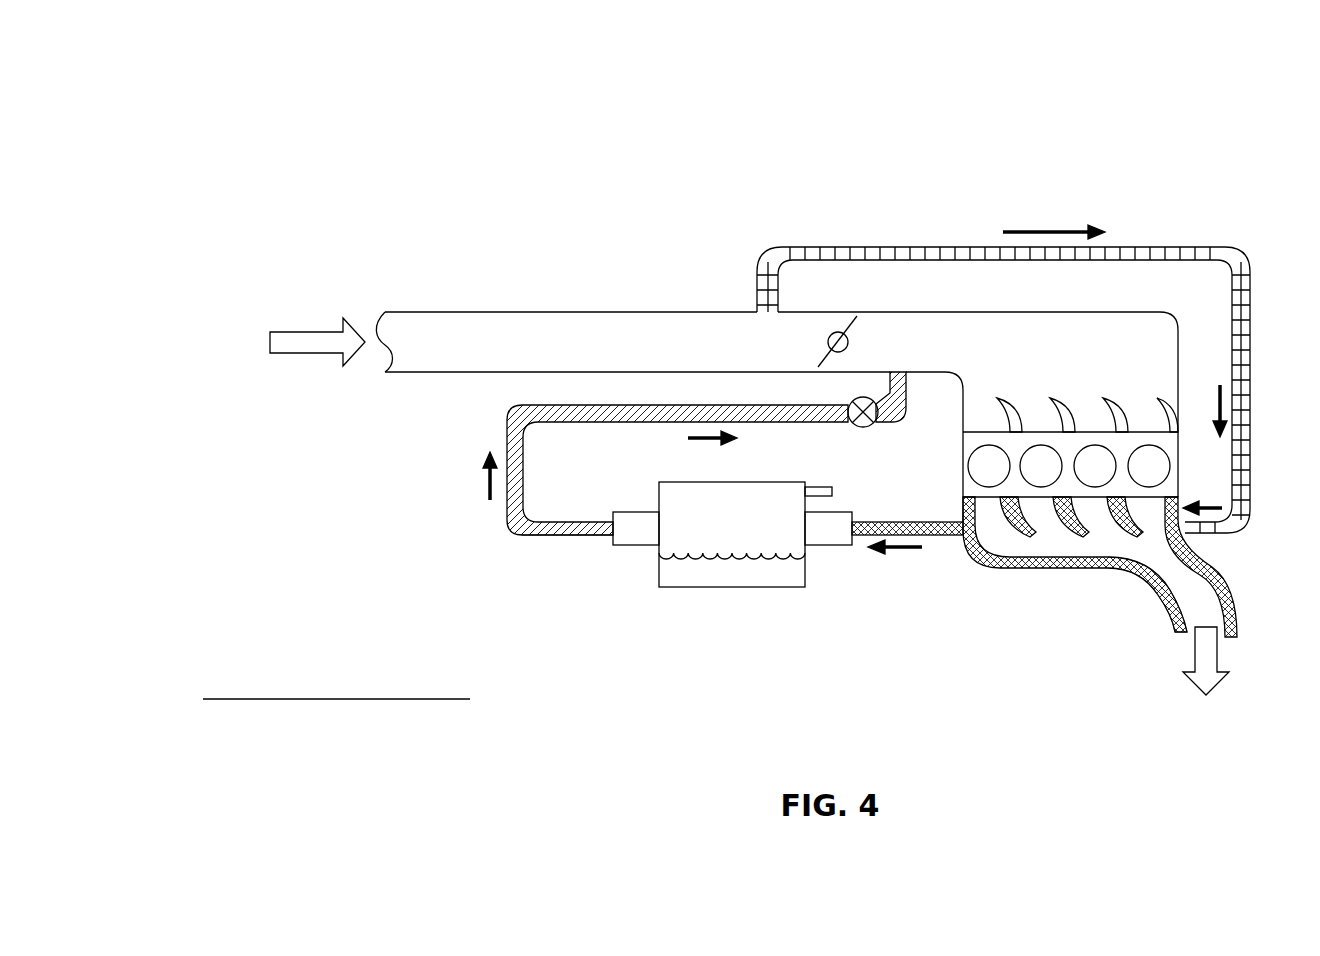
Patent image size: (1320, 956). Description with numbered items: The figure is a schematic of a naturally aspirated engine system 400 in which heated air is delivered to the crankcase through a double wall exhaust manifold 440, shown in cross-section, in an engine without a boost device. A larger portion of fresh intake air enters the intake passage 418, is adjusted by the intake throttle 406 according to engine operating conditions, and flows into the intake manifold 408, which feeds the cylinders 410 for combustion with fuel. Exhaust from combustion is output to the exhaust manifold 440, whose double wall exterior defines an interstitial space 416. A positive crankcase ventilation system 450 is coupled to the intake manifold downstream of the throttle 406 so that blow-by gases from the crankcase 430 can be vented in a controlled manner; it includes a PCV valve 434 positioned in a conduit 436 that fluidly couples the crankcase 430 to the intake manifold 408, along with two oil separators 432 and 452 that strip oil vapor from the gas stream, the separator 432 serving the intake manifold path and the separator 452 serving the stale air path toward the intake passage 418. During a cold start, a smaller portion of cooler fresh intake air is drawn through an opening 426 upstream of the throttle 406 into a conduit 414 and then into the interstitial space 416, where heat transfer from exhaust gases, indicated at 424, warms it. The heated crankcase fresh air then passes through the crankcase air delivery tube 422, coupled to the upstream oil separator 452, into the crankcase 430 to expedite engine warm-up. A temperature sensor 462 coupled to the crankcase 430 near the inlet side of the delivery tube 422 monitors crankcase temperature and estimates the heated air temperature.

The engine system 400 is at (222, 108).
The intake throttle 406 is at (830, 347).
The intake manifold 408 is at (1180, 358).
The cylinders 410 is at (1163, 447).
The conduit 414 is at (1253, 268).
The interstitial space 416 is at (1080, 563).
The intake passage 418 is at (415, 390).
The crankcase air delivery tube 422 is at (947, 537).
The heat transfer from exhaust gases 424 is at (1018, 579).
The opening 426 is at (752, 305).
The crankcase 430 is at (732, 534).
The oil separator 432 is at (636, 528).
The PCV valve 434 is at (870, 425).
The conduit 436 is at (523, 457).
The double wall exhaust manifold 440 is at (1237, 588).
The positive crankcase ventilation system 450 is at (598, 565).
The oil separator 452 is at (828, 528).
The temperature sensor 462 is at (815, 485).